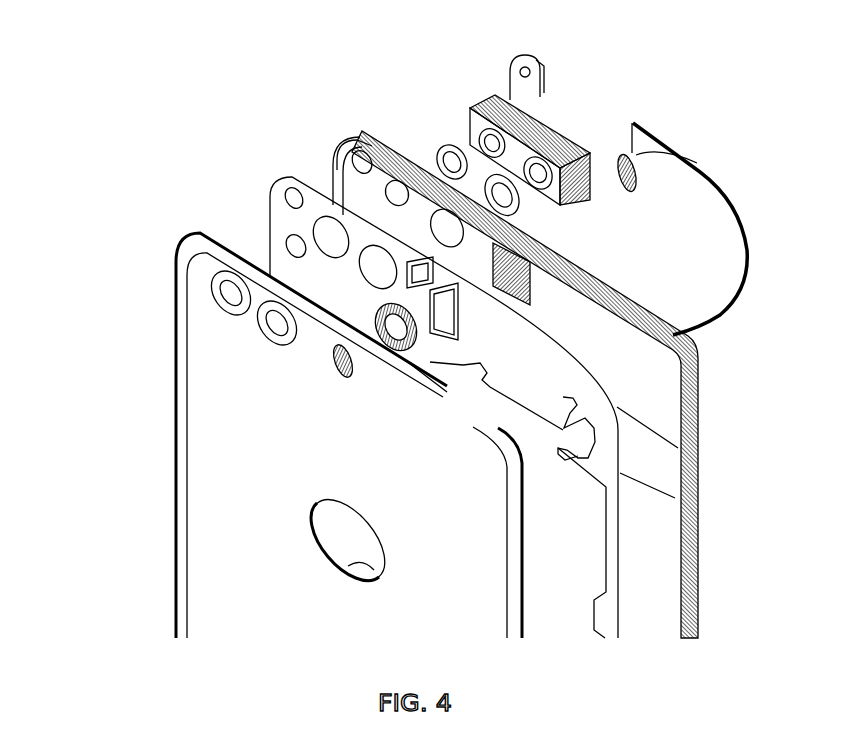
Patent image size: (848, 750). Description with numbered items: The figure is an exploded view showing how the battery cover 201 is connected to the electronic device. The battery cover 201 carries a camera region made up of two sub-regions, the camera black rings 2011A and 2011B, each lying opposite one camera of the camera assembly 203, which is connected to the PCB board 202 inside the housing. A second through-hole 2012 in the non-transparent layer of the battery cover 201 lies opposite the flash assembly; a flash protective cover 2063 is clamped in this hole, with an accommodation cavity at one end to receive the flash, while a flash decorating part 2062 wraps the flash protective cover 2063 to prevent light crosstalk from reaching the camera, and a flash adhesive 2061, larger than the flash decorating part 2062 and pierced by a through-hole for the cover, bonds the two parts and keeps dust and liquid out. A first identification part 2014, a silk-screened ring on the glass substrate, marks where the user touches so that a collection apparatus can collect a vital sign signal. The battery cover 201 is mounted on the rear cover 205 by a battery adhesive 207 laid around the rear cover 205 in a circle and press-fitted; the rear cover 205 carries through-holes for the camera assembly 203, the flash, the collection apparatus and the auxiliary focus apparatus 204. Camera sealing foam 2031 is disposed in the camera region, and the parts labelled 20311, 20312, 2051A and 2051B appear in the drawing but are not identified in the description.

The battery cover 201 is at (278, 435).
The camera black ring 2011A is at (268, 322).
The camera black ring 2011B is at (218, 288).
The second through-hole 2012 is at (352, 378).
The first identification part 2014 is at (378, 576).
The PCB board 202 is at (523, 88).
The camera assembly 203 is at (573, 148).
The camera sealing foam 2031 is at (457, 140).
The module side wall 20311 is at (553, 220).
The lens opening 20312 is at (435, 147).
The auxiliary focus apparatus 204 is at (697, 163).
The rear cover 205 is at (690, 353).
The first bracket portion 2051A is at (337, 165).
The second bracket portion 2051B is at (360, 135).
The flash adhesive 2061 is at (268, 245).
The flash decorating part 2062 is at (400, 363).
The flash protective cover 2063 is at (427, 393).
The battery adhesive 207 is at (675, 500).